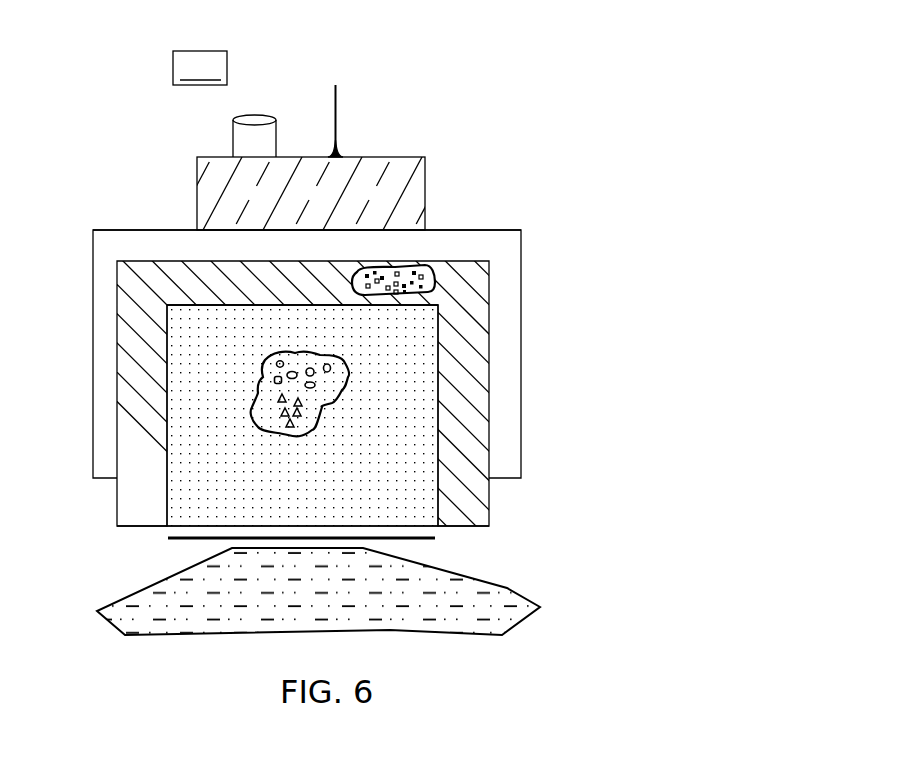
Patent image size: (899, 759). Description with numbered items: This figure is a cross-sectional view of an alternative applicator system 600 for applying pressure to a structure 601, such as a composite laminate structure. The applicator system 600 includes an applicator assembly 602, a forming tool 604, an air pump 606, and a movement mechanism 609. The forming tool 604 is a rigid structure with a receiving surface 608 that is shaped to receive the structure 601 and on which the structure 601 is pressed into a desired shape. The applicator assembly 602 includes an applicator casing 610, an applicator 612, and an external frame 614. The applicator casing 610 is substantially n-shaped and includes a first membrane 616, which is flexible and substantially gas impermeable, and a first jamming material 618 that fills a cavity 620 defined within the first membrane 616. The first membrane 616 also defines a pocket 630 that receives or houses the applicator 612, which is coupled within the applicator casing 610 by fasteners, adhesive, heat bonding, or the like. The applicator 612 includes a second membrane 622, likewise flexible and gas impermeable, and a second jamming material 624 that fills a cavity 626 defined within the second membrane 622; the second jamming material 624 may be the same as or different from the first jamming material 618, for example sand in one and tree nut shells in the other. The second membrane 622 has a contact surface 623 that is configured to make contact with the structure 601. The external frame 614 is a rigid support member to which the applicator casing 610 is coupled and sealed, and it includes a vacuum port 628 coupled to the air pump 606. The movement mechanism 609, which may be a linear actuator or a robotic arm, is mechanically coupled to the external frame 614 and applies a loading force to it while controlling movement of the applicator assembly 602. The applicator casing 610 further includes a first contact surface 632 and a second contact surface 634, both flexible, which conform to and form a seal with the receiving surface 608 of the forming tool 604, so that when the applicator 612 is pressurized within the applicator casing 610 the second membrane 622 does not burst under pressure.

The applicator system 600 is at (480, 70).
The structure 601 is at (398, 540).
The applicator assembly 602 is at (482, 226).
The forming tool 604 is at (445, 636).
The air pump 606 is at (215, 82).
The receiving surface 608 is at (112, 605).
The movement mechanism 609 is at (338, 88).
The applicator casing 610 is at (465, 330).
The applicator 612 is at (418, 393).
The external frame 614 is at (149, 229).
The first membrane 616 is at (468, 297).
The first jamming material 618 is at (420, 258).
The cavity 620 is at (376, 256).
The second membrane 622 is at (418, 438).
The contact surface 623 is at (430, 528).
The second jamming material 624 is at (264, 412).
The cavity 626 is at (256, 383).
The vacuum port 628 is at (236, 117).
The pocket 630 is at (214, 318).
The first contact surface 632 is at (143, 530).
The second contact surface 634 is at (470, 527).